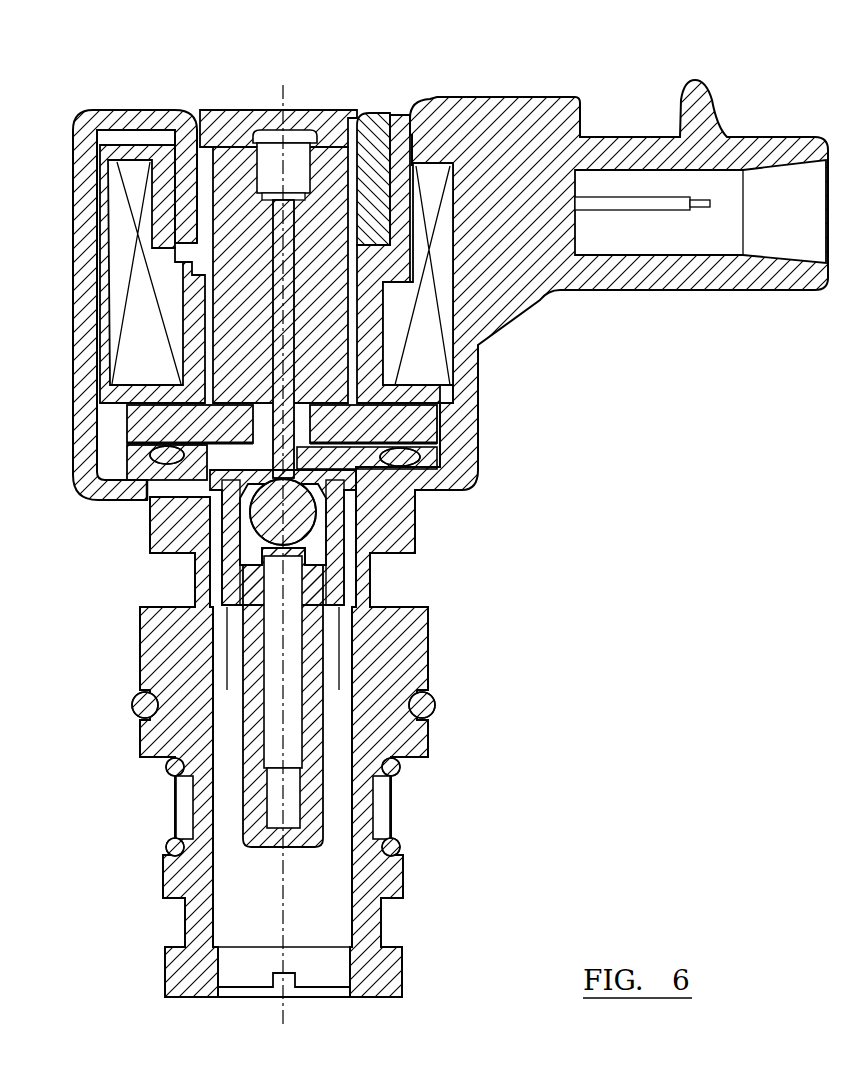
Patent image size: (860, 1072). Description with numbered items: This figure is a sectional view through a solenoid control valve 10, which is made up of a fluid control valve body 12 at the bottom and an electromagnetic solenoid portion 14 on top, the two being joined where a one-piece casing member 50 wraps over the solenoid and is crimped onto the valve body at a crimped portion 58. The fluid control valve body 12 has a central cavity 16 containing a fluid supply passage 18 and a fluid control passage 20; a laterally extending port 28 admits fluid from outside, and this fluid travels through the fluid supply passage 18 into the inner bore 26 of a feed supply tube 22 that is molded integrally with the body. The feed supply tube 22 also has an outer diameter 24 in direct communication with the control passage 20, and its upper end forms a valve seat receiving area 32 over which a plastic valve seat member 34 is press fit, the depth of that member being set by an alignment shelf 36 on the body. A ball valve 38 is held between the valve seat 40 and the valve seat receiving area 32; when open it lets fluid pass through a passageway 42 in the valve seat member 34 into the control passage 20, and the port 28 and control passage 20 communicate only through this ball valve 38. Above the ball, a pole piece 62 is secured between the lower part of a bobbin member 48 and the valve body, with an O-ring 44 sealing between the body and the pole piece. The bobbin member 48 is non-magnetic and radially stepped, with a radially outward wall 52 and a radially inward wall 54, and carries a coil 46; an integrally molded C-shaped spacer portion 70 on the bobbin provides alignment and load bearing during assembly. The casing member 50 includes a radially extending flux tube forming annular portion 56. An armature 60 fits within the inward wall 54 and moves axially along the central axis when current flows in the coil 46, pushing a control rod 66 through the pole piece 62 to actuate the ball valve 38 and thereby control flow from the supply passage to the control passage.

The solenoid control valve 10 is at (630, 53).
The fluid control valve body 12 is at (416, 527).
The electromagnetic solenoid portion 14 is at (76, 369).
The central cavity 16 is at (254, 881).
The fluid supply passage 18 is at (290, 808).
The fluid control passage 20 is at (315, 923).
The feed supply tube 22 is at (325, 702).
The outer diameter 24 is at (245, 763).
The inner bore 26 is at (295, 756).
The laterally extending port 28 is at (285, 803).
The valve seat receiving area 32 is at (240, 561).
The valve seat member 34 is at (372, 436).
The alignment shelf 36 is at (415, 502).
The ball valve 38 is at (250, 513).
The valve seat 40 is at (133, 490).
The passageway 42 is at (205, 427).
The O-ring 44 is at (160, 463).
The coil 46 is at (435, 345).
The bobbin member 48 is at (490, 125).
The casing member 50 is at (88, 272).
The radially outward wall 52 is at (383, 215).
The radially inward wall 54 is at (350, 333).
The flux tube forming annular portion 56 is at (192, 183).
The crimped portion 58 is at (142, 510).
The armature 60 is at (240, 230).
The pole piece 62 is at (422, 424).
The control rod 66 is at (280, 322).
The spacer portion 70 is at (150, 133).